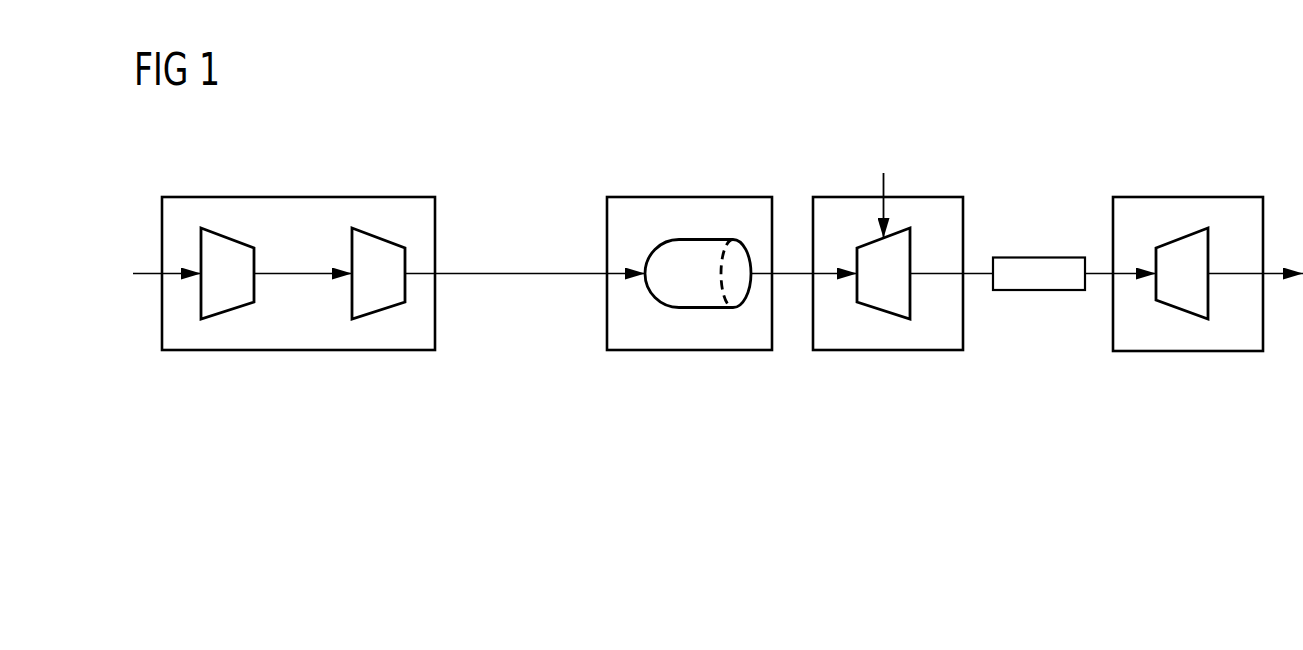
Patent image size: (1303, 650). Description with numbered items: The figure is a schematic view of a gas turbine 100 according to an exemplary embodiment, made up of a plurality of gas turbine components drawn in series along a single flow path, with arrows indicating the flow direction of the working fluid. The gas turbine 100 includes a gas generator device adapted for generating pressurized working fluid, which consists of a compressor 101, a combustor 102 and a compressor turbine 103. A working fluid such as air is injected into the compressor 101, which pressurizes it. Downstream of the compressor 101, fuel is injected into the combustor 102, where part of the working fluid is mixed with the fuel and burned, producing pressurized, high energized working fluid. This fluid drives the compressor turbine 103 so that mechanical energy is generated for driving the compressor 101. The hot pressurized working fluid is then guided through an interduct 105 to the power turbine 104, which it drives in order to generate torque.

The gas turbine 100 is at (1138, 116).
The compressor 101 is at (298, 196).
The combustor 102 is at (688, 196).
The compressor turbine 103 is at (906, 196).
The power turbine 104 is at (1188, 196).
The interduct 105 is at (1038, 257).